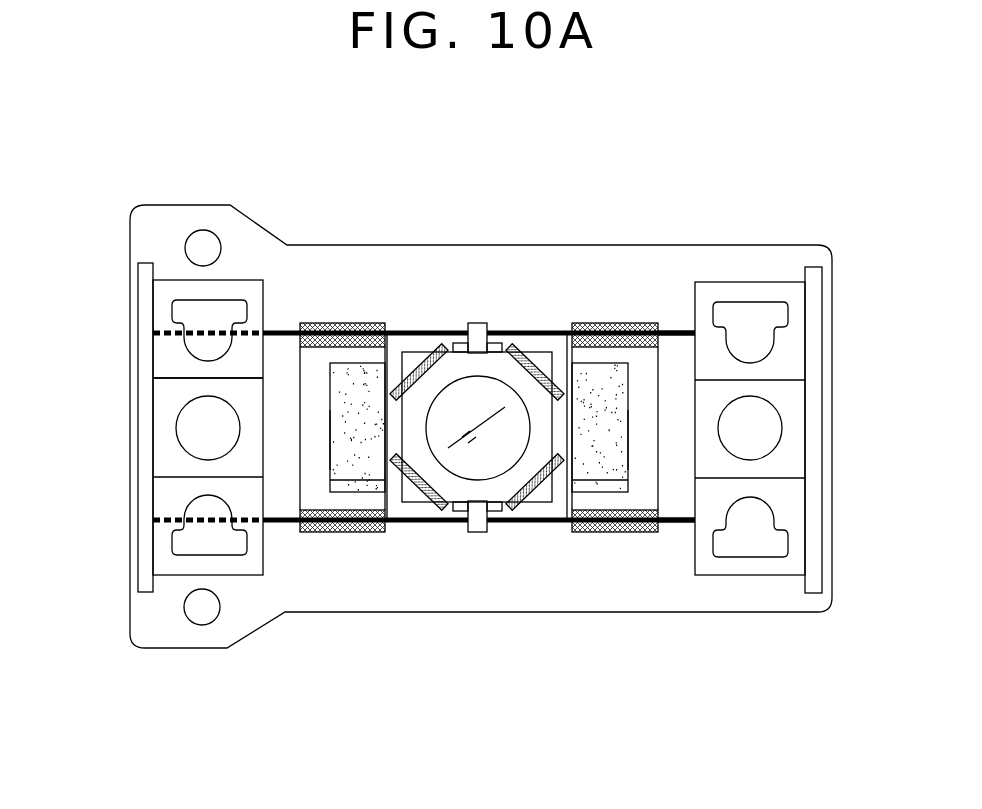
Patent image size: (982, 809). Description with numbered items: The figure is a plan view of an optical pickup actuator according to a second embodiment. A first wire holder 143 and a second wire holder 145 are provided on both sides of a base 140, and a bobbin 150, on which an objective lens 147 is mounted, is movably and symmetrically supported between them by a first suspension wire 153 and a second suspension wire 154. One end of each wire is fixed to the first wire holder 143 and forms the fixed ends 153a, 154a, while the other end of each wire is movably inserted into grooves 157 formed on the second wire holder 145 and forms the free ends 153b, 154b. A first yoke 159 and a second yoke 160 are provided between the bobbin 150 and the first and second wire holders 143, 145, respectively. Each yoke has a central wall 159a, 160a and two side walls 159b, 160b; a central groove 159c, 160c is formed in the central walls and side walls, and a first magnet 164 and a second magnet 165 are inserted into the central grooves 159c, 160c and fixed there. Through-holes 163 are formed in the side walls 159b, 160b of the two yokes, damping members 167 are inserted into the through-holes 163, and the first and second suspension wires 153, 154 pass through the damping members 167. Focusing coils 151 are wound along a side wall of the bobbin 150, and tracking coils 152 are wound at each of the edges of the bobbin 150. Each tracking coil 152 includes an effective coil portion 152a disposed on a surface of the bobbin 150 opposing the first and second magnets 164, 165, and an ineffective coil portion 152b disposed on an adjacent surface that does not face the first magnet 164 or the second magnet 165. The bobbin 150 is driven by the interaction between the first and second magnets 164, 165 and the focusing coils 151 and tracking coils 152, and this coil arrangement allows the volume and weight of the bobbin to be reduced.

The base 140 is at (192, 643).
The first wire holder 143 is at (768, 280).
The second wire holder 145 is at (198, 282).
The objective lens 147 is at (467, 390).
The bobbin 150 is at (531, 372).
The focusing coils 151 is at (416, 350).
The tracking coils 152 is at (482, 718).
The effective coil portion 152a is at (390, 462).
The ineffective coil portion 152b is at (443, 508).
The first suspension wire 153 is at (527, 384).
The fixed end 153a is at (700, 330).
The free end 153b is at (153, 333).
The second suspension wire 154 is at (510, 524).
The fixed end 154a is at (697, 524).
The free end 154b is at (153, 520).
The grooves 157 is at (256, 298).
The first yoke 159 is at (670, 186).
The central wall 159a is at (643, 410).
The side walls 159b is at (609, 357).
The central groove 159c is at (626, 428).
The second yoke 160 is at (367, 183).
The central wall 160a is at (313, 408).
The side walls 160b is at (347, 358).
The central groove 160c is at (333, 452).
The through-holes 163 is at (607, 503).
The first magnet 164 is at (626, 457).
The second magnet 165 is at (333, 428).
The damping members 167 is at (640, 533).